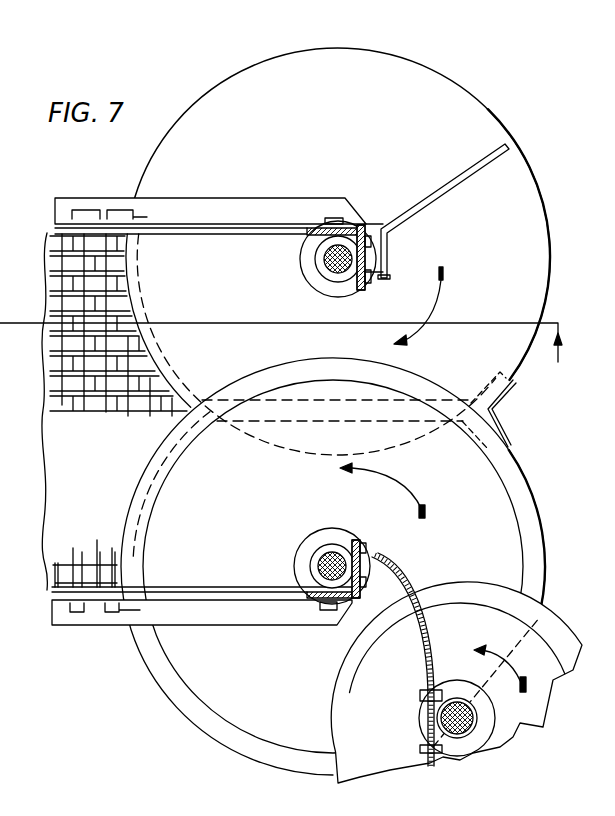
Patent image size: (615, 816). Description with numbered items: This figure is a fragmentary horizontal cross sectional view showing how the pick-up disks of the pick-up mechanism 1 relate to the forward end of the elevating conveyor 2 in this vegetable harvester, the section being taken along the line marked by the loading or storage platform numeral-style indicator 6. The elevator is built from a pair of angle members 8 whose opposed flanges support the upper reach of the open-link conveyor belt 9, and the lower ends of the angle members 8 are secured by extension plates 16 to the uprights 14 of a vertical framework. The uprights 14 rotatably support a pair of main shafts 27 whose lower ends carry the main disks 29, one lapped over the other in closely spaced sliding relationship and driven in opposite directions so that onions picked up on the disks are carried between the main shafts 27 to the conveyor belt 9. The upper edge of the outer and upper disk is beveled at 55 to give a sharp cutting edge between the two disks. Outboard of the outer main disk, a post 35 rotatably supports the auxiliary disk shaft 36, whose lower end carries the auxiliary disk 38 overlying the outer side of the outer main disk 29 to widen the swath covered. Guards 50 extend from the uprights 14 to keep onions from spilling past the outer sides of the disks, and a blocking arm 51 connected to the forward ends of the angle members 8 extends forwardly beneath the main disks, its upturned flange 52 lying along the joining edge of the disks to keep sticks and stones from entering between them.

The pick-up mechanism 1 is at (550, 223).
The conveyor 2 is at (47, 257).
The loading or storage platform 6 is at (281, 356).
The angle members 8 is at (53, 231).
The conveyor belt 9 is at (52, 573).
The uprights 14 is at (372, 233).
The extension plates 16 is at (220, 210).
The main shafts 27 is at (330, 270).
The disks 29 is at (528, 192).
The post 35 is at (433, 755).
The auxiliary disk shaft 36 is at (460, 728).
The auxiliary disk 38 is at (548, 632).
The guards 50 is at (458, 186).
The blocking arm 51 is at (157, 364).
The upturned flange 52 is at (494, 415).
The beveled edge 55 is at (512, 482).